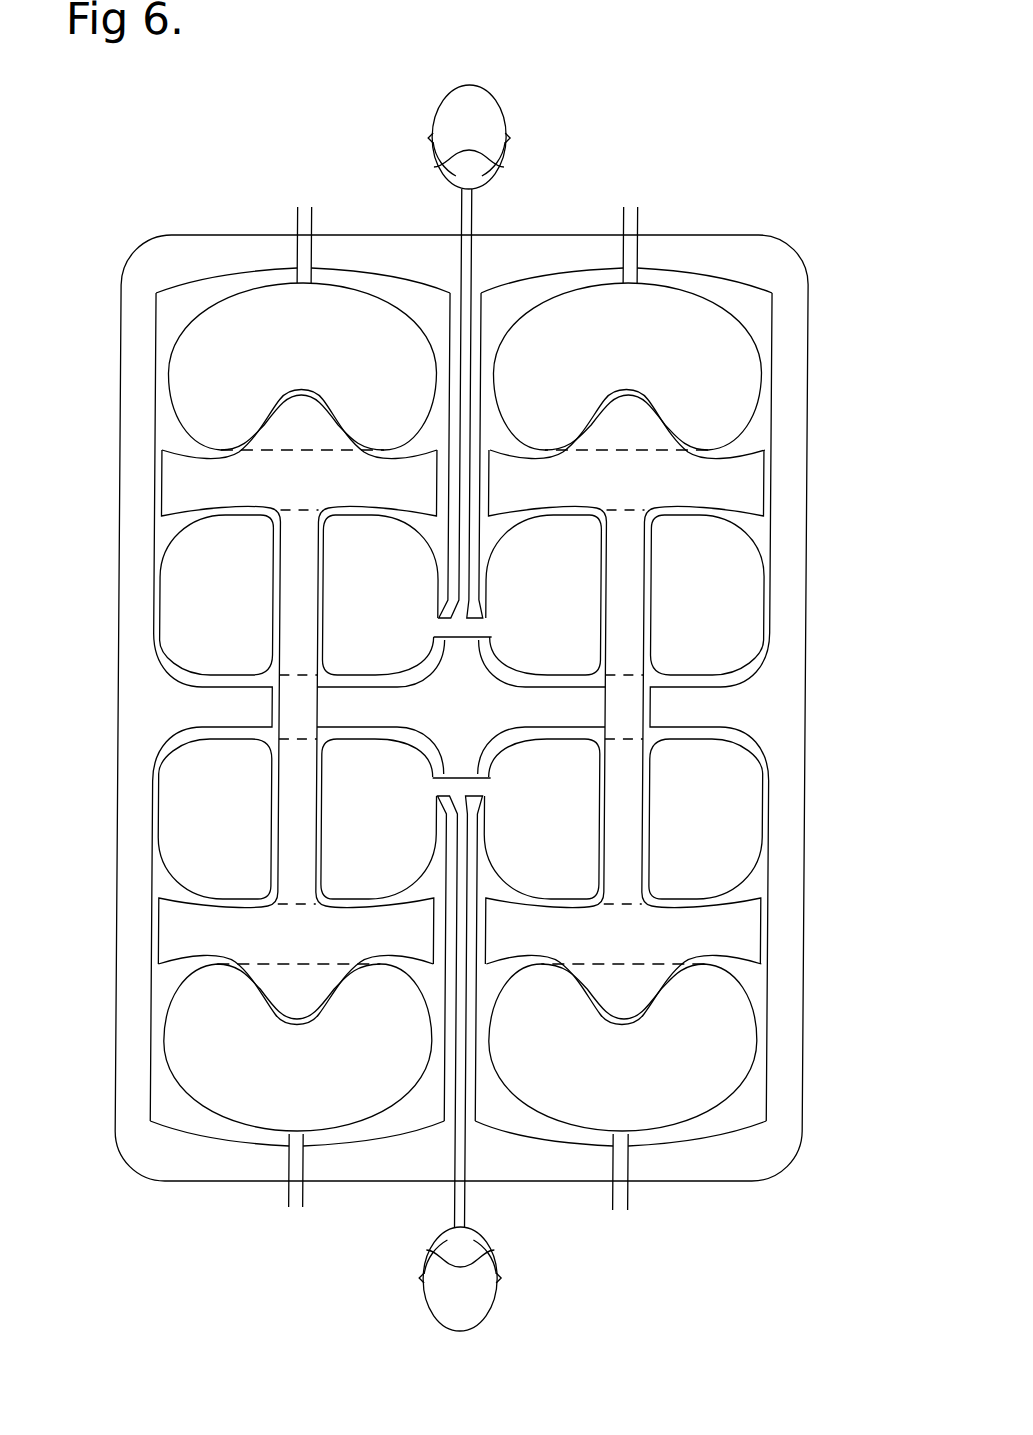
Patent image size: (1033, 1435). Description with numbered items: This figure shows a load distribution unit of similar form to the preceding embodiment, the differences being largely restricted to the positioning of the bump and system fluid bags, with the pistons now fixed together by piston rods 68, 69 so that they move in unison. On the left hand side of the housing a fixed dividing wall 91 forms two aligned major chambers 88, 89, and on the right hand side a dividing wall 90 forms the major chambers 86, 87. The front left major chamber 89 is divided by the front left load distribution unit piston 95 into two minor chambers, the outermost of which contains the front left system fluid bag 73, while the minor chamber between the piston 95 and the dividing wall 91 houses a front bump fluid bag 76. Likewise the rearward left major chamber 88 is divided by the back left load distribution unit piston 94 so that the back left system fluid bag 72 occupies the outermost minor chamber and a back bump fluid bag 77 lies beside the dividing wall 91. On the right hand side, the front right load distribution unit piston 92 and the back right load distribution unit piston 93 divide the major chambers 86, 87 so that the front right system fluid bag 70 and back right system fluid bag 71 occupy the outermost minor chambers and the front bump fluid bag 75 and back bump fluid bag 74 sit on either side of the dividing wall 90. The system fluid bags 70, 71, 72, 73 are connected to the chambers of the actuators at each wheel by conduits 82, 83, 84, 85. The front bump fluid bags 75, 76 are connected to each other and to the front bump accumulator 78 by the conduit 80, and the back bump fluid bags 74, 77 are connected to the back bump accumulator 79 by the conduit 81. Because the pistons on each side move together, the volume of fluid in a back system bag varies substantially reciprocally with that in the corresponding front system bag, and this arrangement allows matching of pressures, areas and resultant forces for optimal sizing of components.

The piston rod 68 is at (630, 598).
The piston rod 69 is at (297, 548).
The front right system fluid bag 70 is at (737, 335).
The back right system fluid bag 71 is at (740, 1068).
The back left system fluid bag 72 is at (197, 1075).
The front left system fluid bag 73 is at (192, 364).
The back bump fluid bag 74 is at (749, 808).
The front bump fluid bag 75 is at (752, 622).
The front bump fluid bag 76 is at (189, 602).
The back bump fluid bag 77 is at (187, 830).
The front bump accumulator 78 is at (495, 107).
The back bump accumulator 79 is at (429, 1300).
The conduit 80 is at (475, 222).
The conduit 81 is at (472, 1200).
The conduit 82 is at (629, 224).
The conduit 83 is at (630, 1195).
The conduit 84 is at (296, 1200).
The conduit 85 is at (296, 224).
The major chamber 86 is at (753, 440).
The back right major chamber 87 is at (755, 972).
The rearward left hand side major chamber 88 is at (180, 968).
The front left major chamber 89 is at (178, 440).
The dividing wall 90 is at (675, 710).
The dividing wall 91 is at (223, 706).
The front right load distribution unit piston 92 is at (758, 487).
The back right load distribution unit piston 93 is at (762, 924).
The back left load distribution unit piston 94 is at (179, 937).
The front left load distribution unit piston 95 is at (173, 482).